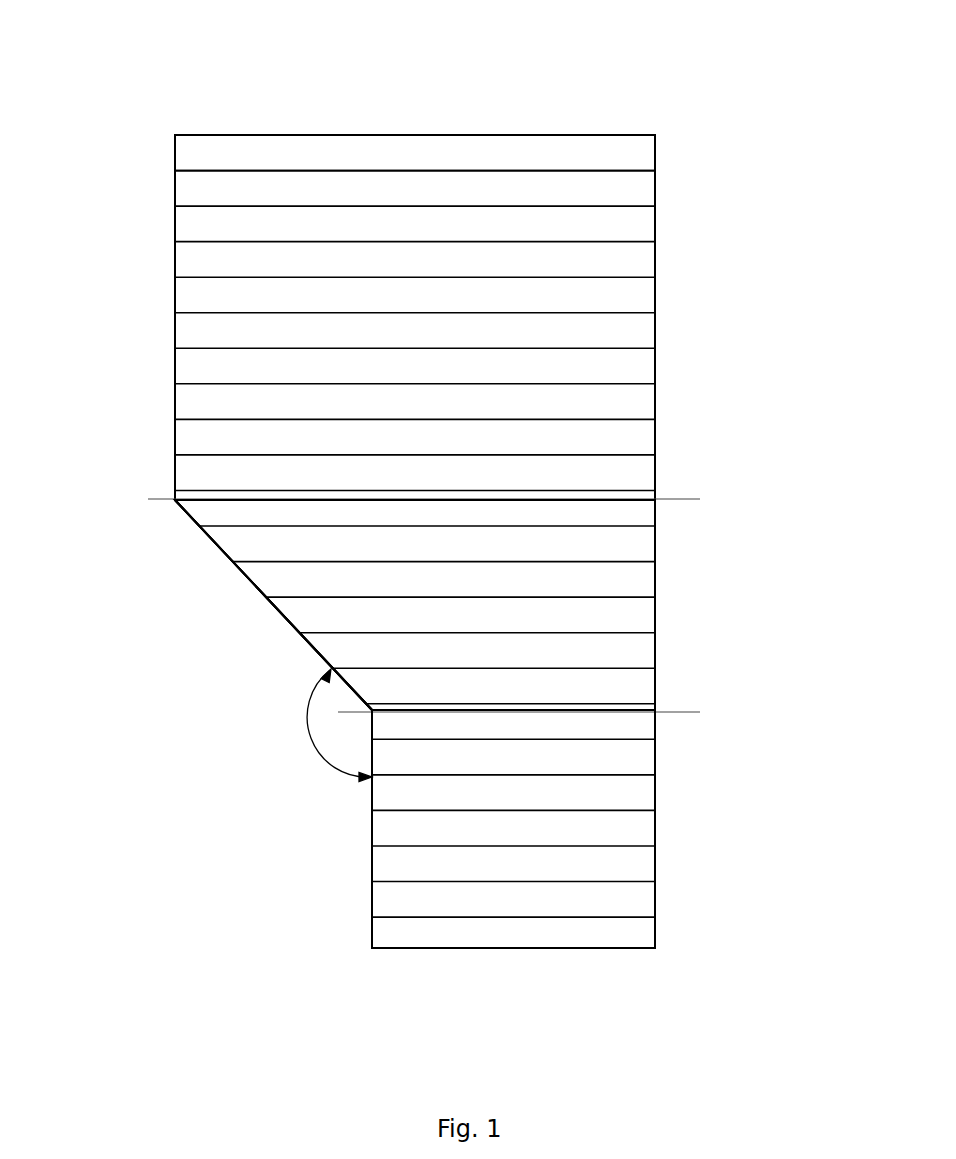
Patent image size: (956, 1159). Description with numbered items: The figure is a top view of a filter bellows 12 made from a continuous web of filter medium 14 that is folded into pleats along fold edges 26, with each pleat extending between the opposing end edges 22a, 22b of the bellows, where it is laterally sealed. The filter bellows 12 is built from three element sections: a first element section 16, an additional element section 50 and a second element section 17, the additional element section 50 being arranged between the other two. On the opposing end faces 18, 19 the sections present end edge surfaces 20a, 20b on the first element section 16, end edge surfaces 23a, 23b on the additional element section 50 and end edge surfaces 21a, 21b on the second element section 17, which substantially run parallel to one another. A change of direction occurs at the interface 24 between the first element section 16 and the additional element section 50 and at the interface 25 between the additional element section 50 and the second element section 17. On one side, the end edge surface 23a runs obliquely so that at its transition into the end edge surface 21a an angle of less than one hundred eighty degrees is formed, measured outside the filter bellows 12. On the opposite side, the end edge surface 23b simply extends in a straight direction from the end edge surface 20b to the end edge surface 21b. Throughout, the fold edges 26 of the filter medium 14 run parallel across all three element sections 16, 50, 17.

The filter bellows 12 is at (721, 157).
The filter medium 14 is at (630, 332).
The first element section 16 is at (435, 307).
The second element section 17 is at (532, 840).
The end face 18 is at (176, 215).
The end face 19 is at (656, 223).
The end edge surface 20a is at (175, 405).
The end edge surface 20b is at (656, 405).
The end edge surface 21a is at (372, 823).
The end edge surface 21b is at (656, 825).
The end edge 22a is at (175, 288).
The end edge 22b is at (656, 283).
The end edge surface 23a is at (271, 618).
The end edge surface 23b is at (656, 585).
The interface 24 is at (682, 499).
The interface 25 is at (682, 712).
The fold edges 26 is at (412, 170).
The additional element section 50 is at (478, 627).